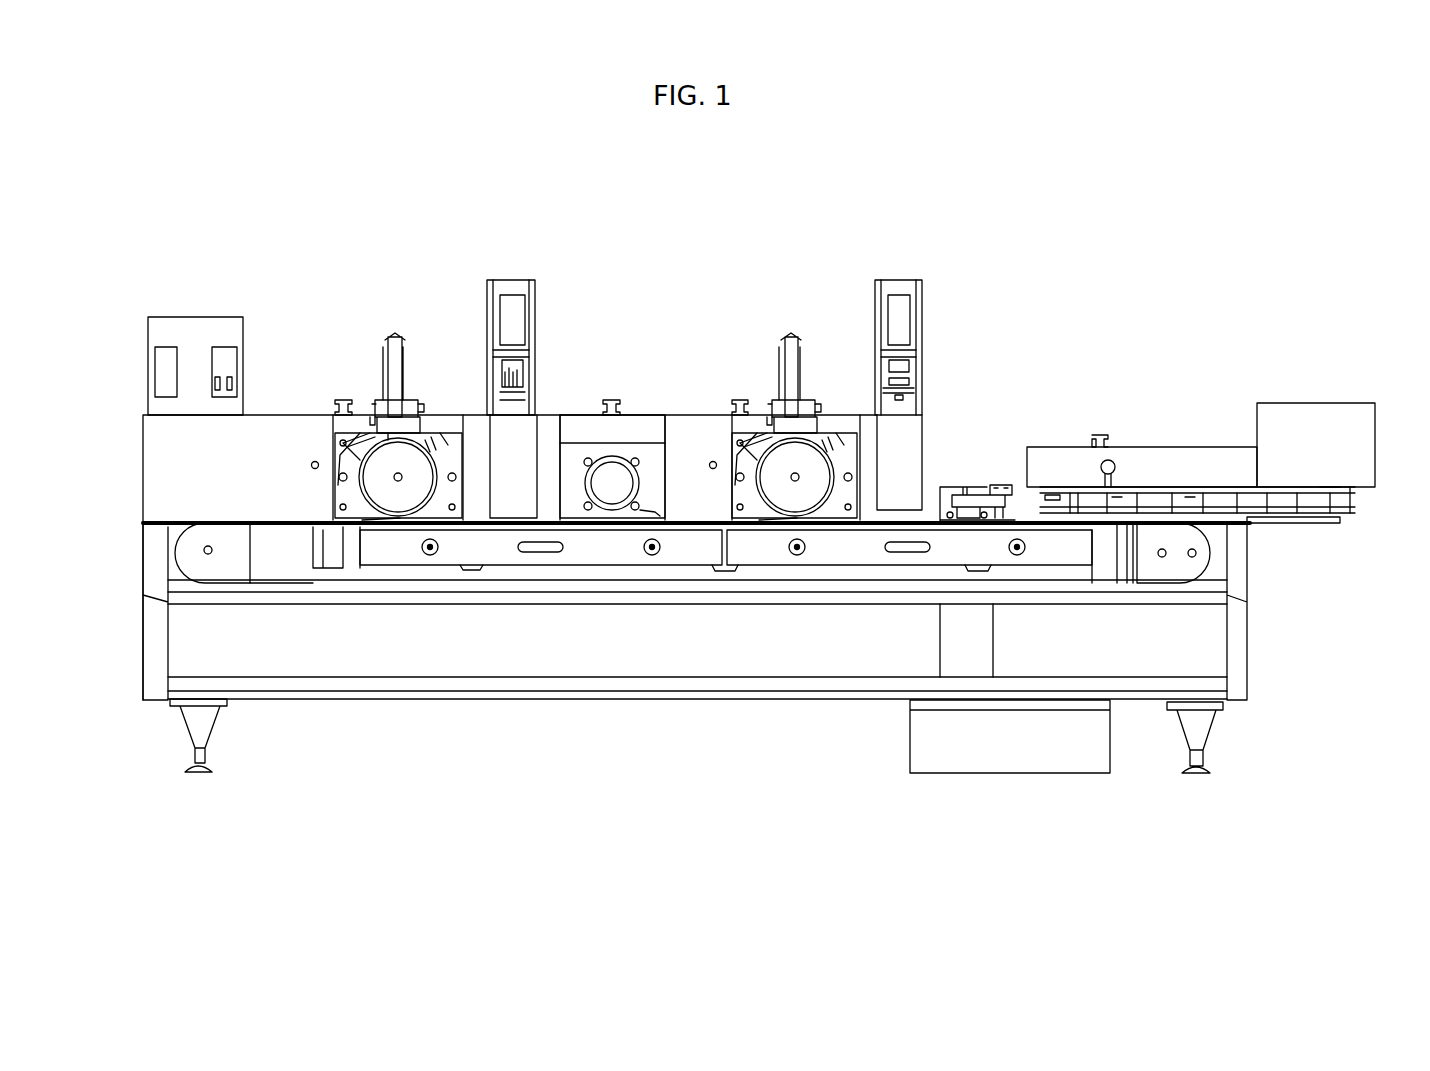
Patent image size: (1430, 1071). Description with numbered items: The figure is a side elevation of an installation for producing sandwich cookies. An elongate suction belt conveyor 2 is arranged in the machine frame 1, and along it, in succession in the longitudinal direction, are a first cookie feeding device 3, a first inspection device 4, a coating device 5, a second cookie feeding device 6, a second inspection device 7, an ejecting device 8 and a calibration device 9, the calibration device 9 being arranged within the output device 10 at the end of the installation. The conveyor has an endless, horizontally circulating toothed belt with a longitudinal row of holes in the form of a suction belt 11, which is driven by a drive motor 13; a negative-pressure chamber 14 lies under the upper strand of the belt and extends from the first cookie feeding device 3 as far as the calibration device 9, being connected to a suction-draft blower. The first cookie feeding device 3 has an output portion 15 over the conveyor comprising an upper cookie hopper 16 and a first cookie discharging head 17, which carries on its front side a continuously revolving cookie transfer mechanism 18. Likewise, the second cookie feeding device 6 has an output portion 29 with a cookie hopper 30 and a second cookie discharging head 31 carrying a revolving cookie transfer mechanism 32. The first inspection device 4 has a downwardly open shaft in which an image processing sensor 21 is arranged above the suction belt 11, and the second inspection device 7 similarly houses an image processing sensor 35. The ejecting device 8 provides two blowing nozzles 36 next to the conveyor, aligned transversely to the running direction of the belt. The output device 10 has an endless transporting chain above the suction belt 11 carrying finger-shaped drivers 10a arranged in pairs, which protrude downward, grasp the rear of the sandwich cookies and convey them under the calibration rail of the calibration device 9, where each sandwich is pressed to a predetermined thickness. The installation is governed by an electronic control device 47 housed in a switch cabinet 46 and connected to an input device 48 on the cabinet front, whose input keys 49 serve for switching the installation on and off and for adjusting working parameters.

The machine frame 1 is at (1237, 652).
The suction belt conveyor 2 is at (1178, 568).
The first cookie feeding device 3 is at (375, 316).
The first inspection device 4 is at (539, 366).
The coating device 5 is at (621, 358).
The second cookie feeding device 6 is at (781, 323).
The second inspection device 7 is at (932, 364).
The ejecting device 8 is at (978, 462).
The calibration device 9 is at (1067, 500).
The output device 10 is at (1217, 455).
The finger-shaped drivers 10a is at (1352, 521).
The suction belt 11 is at (262, 530).
The drive motor 13 is at (205, 535).
The negative-pressure chamber 14 is at (768, 547).
The output portion 15 is at (380, 378).
The upper cookie hopper 16 is at (405, 372).
The first cookie discharging head 17 is at (404, 507).
The cookie transfer mechanism 18 is at (420, 500).
The image processing sensor 21 is at (530, 362).
The output portion 29 is at (775, 378).
The cookie hopper 30 is at (800, 370).
The second cookie discharging head 31 is at (802, 507).
The cookie transfer mechanism 32 is at (828, 520).
The image processing sensor 35 is at (905, 358).
The blowing nozzles 36 is at (950, 518).
The switch cabinet 46 is at (163, 316).
The electronic control device 47 is at (160, 370).
The input device 48 is at (226, 355).
The input keys 49 is at (216, 384).